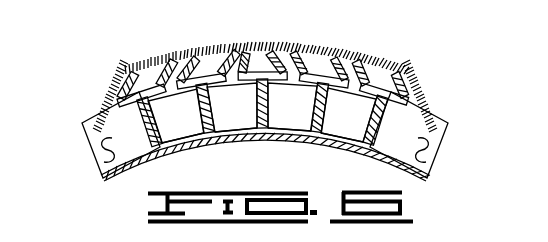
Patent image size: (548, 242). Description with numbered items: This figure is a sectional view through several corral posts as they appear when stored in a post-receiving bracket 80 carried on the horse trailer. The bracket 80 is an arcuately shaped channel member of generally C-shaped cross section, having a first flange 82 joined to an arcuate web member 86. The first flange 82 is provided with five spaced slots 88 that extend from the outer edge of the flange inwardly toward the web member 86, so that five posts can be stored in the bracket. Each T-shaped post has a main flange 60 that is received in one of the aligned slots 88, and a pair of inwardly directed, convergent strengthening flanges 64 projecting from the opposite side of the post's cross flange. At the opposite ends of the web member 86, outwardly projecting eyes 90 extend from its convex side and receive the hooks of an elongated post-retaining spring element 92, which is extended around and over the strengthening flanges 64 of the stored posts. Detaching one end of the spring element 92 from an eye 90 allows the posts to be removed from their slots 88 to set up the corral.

The main flange 60 is at (269, 108).
The strengthening flanges 64 is at (183, 70).
The post-receiving bracket 80 is at (86, 162).
The first flange 82 is at (247, 113).
The web member 86 is at (252, 141).
The slots 88 is at (160, 118).
The eyes 90 is at (96, 150).
The post-retaining spring element 92 is at (291, 48).